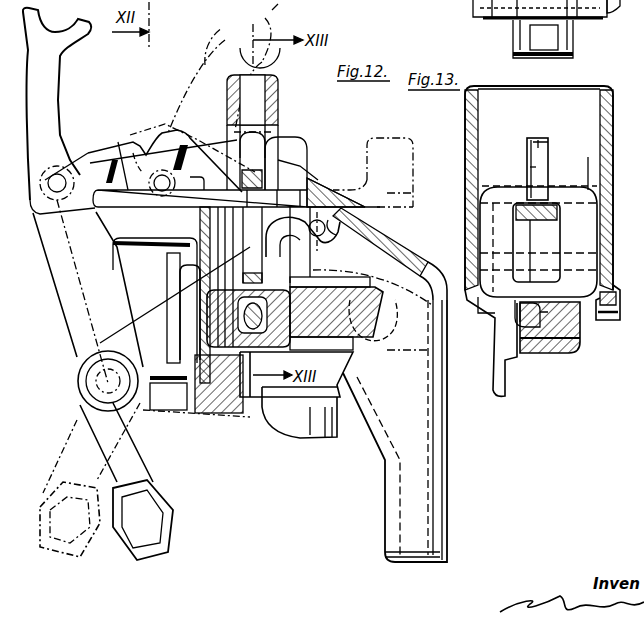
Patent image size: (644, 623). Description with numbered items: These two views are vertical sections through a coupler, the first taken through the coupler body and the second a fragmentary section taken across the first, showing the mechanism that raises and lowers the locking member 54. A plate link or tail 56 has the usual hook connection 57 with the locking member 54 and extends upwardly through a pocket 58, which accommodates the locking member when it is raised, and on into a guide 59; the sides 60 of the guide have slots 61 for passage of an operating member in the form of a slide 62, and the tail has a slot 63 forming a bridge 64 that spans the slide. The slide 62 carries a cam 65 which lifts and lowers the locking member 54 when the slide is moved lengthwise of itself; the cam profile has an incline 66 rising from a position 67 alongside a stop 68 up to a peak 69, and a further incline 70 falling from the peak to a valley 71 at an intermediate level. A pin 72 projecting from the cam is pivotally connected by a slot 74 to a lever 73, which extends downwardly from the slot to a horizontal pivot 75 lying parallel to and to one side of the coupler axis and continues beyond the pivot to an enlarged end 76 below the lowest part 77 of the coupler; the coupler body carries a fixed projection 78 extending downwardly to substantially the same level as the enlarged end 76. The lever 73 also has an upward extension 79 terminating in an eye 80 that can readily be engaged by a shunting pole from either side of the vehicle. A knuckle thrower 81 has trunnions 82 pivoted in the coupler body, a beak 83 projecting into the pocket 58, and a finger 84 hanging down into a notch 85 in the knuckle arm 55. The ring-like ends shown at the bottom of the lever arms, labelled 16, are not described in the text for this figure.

In FIG. 12, the ring eye 16 is at (167, 517).
In FIG. 12, the locking member 54 is at (276, 350).
In FIG. 13, the locking member 54 is at (558, 353).
In FIG. 12, the knuckle arm 55 is at (360, 340).
In FIG. 12, the plate link or tail 56 is at (210, 280).
In FIG. 13, the plate link or tail 56 is at (586, 165).
In FIG. 12, the hook connection 57 is at (210, 310).
In FIG. 13, the hook connection 57 is at (530, 312).
In FIG. 12, the pocket 58 is at (215, 268).
In FIG. 13, the pocket 58 is at (606, 315).
In FIG. 12, the guide 59 is at (258, 90).
In FIG. 13, the guide 59 is at (605, 113).
In FIG. 12, the sides 60 is at (235, 95).
In FIG. 13, the sides 60 is at (568, 96).
In FIG. 12, the slots 61 is at (285, 146).
In FIG. 13, the slots 61 is at (540, 140).
In FIG. 12, the slide 62 is at (103, 190).
In FIG. 13, the slide 62 is at (536, 242).
In FIG. 12, the slot 63 is at (183, 258).
In FIG. 13, the slot 63 is at (553, 223).
In FIG. 12, the bridge 64 is at (278, 170).
In FIG. 13, the bridge 64 is at (545, 196).
In FIG. 12, the cam 65 is at (118, 142).
In FIG. 12, the incline 66 is at (266, 245).
In FIG. 12, the position 67 is at (300, 172).
In FIG. 12, the stop 68 is at (272, 167).
In FIG. 12, the peak 69 is at (162, 170).
In FIG. 13, the peak 69 is at (548, 145).
In FIG. 12, the incline 70 is at (185, 135).
In FIG. 12, the valley 71 is at (150, 160).
In FIG. 13, the valley 71 is at (541, 166).
In FIG. 12, the pin 72 is at (60, 180).
In FIG. 12, the lever 73 is at (77, 293).
In FIG. 12, the slot 74 is at (48, 212).
In FIG. 12, the horizontal pivot 75 is at (95, 383).
In FIG. 13, the horizontal pivot 75 is at (503, 20).
In FIG. 13, the enlarged end 76 is at (572, 33).
In FIG. 12, the lowest part 77 is at (337, 438).
In FIG. 12, the fixed projection 78 is at (388, 507).
In FIG. 12, the upward extension 79 is at (45, 100).
In FIG. 12, the eye 80 is at (80, 33).
In FIG. 12, the knuckle thrower 81 is at (347, 250).
In FIG. 12, the trunnions 82 is at (318, 238).
In FIG. 12, the beak 83 is at (282, 250).
In FIG. 12, the finger 84 is at (420, 233).
In FIG. 12, the notch 85 is at (395, 342).